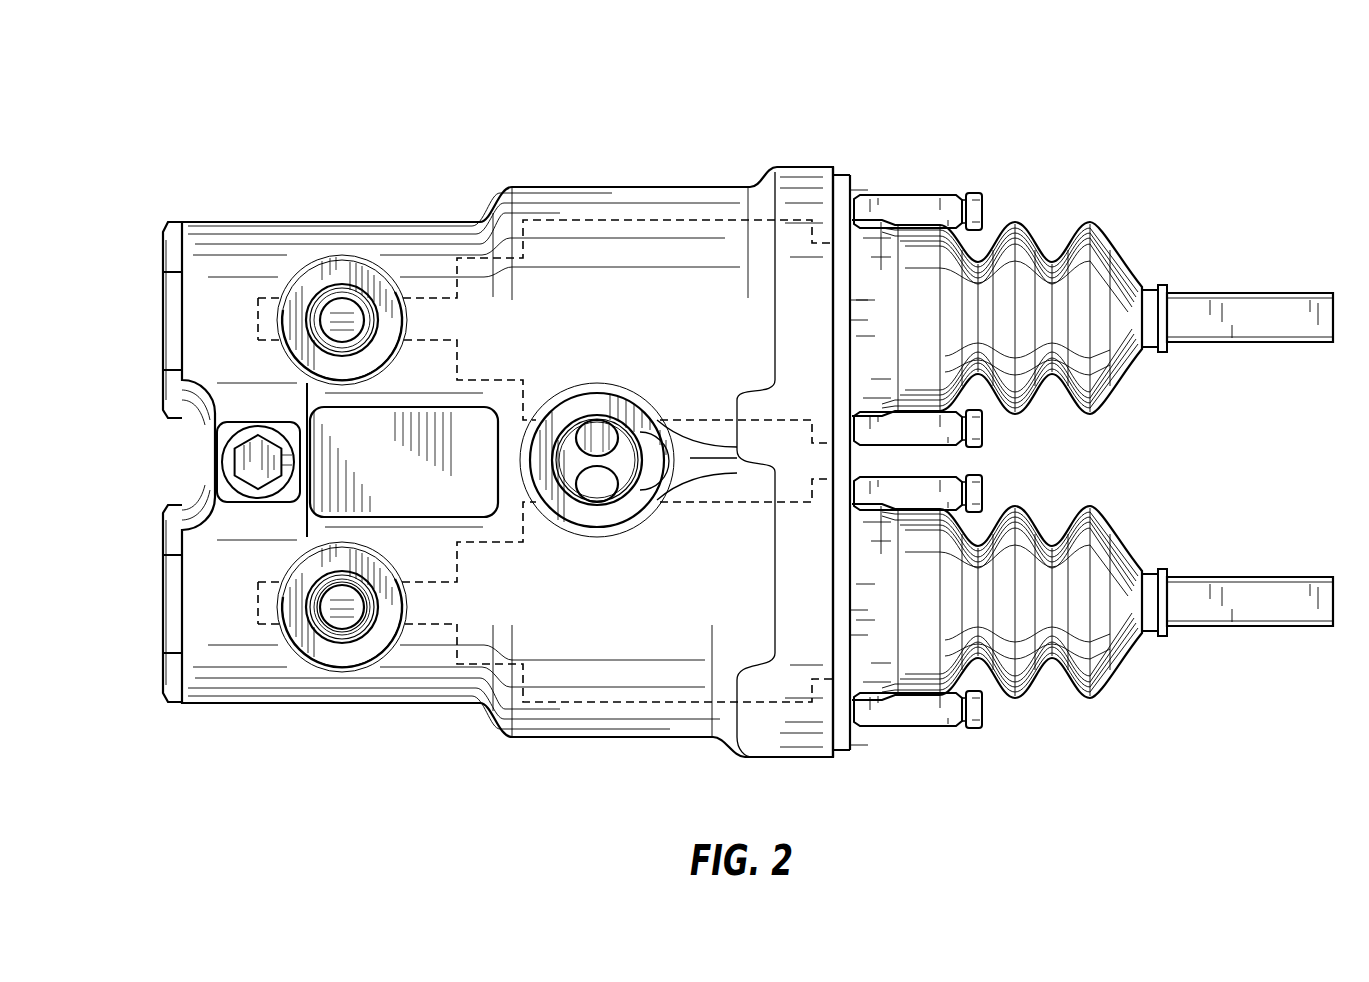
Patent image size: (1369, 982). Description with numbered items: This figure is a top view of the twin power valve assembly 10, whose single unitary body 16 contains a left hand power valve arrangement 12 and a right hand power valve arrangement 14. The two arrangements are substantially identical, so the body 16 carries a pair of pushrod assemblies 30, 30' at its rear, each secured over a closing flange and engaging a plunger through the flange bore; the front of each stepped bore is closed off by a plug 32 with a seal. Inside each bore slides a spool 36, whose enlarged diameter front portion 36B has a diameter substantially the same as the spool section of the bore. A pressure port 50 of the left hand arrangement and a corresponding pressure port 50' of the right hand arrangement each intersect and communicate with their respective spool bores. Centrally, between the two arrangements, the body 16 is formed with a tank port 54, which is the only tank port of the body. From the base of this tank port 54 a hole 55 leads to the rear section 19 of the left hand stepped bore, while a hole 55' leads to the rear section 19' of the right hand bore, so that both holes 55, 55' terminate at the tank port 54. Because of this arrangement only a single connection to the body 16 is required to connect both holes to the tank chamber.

The twin power valve assembly 10 is at (140, 80).
The left hand power valve arrangement 12 is at (170, 737).
The right hand power valve arrangement 14 is at (172, 202).
The body 16 is at (228, 708).
The rear section 19 is at (746, 516).
The rear section 19' is at (746, 408).
The pushrod assembly 30 is at (1092, 601).
The pushrod assembly 30' is at (1092, 320).
The plug 32 is at (163, 597).
The spool 36 is at (341, 625).
The enlarged diameter front portion 36B is at (360, 608).
The pressure port 50 is at (309, 607).
The pressure port 50' is at (307, 320).
The tank port 54 is at (622, 435).
The hole 55 is at (583, 531).
The hole 55' is at (584, 398).